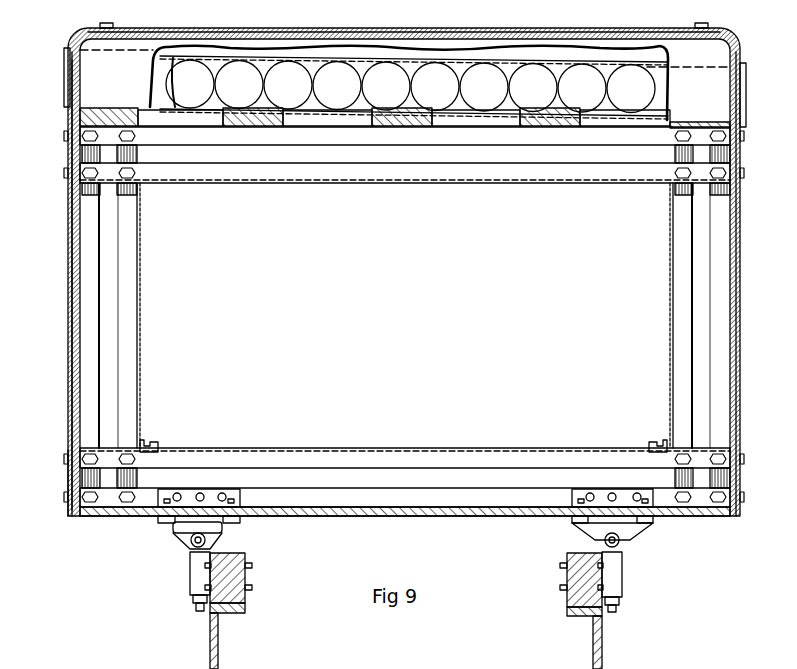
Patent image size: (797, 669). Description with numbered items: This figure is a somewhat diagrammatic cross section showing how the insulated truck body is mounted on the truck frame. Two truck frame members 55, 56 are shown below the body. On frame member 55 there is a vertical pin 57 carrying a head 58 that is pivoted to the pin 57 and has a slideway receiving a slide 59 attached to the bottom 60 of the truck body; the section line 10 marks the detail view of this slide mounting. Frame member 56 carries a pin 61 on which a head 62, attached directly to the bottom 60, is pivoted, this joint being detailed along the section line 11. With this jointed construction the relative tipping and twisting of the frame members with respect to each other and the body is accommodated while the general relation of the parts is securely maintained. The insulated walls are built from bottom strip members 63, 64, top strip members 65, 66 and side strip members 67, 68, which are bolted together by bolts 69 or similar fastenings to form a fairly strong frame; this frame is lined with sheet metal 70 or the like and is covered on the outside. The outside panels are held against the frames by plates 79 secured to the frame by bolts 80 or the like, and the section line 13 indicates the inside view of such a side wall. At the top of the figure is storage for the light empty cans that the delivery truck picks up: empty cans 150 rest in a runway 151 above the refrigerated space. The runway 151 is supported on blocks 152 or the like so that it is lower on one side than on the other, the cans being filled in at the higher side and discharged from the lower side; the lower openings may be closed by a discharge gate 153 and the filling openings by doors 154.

The section line 10— 10 is at (148, 652).
The section line 11— 11 is at (660, 615).
The section line 13— 13 is at (670, 548).
The truck frame member 55 is at (218, 642).
The truck frame member 56 is at (595, 637).
The vertical pin 57 is at (200, 609).
The head 58 is at (217, 538).
The slide 59 is at (243, 526).
The bottom of the truck body 60 is at (542, 516).
The pin 61 is at (612, 612).
The head 62 is at (618, 533).
The bottom strip member 63 is at (342, 498).
The bottom strip member 64 is at (299, 458).
The top strip member 65 is at (340, 174).
The top strip member 66 is at (413, 136).
The side strip member 67 is at (90, 296).
The side strip member 68 is at (130, 333).
The bolts 69 is at (131, 174).
The sheet metal lining 70 is at (138, 412).
The plates 79 is at (72, 337).
The bolts 80 is at (72, 457).
The empty cans 150 is at (410, 86).
The runway 151 is at (493, 118).
The blocks 152 is at (257, 126).
The discharge gate 153 is at (743, 103).
The doors 154 is at (63, 87).